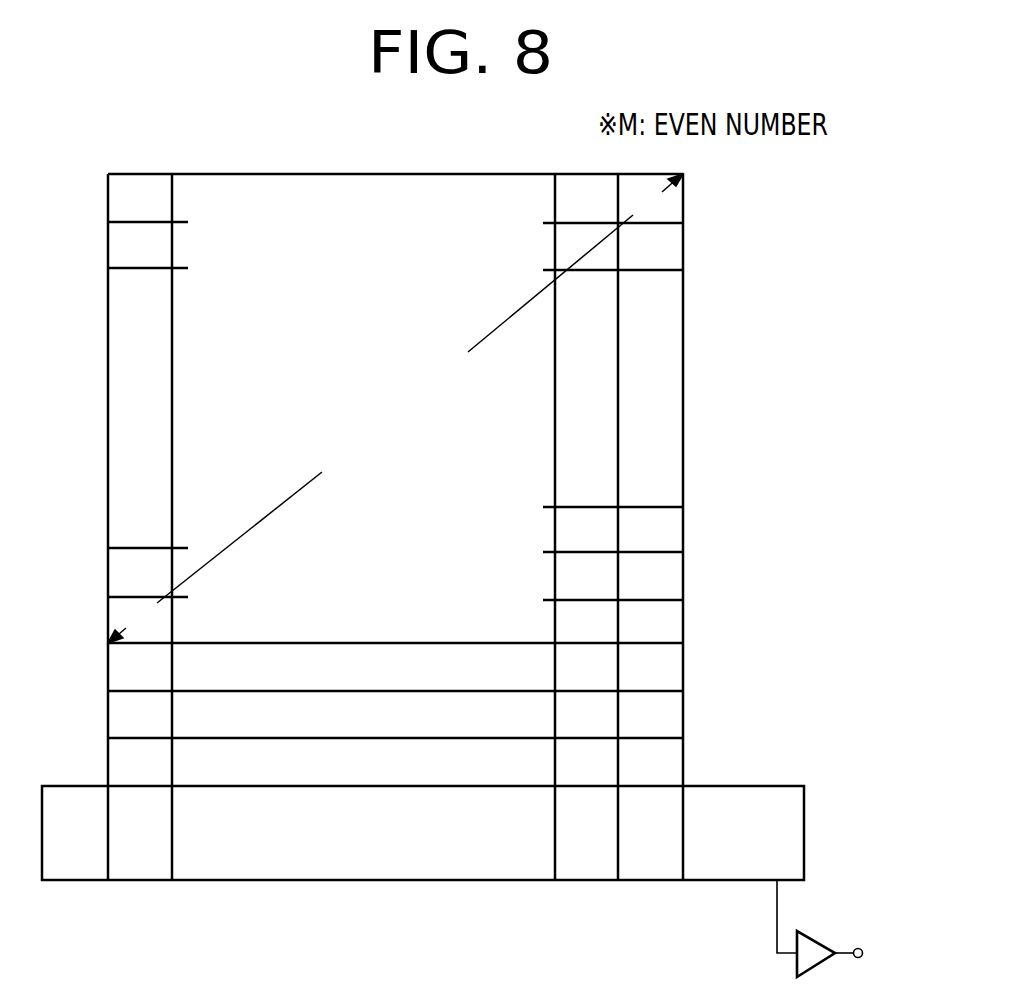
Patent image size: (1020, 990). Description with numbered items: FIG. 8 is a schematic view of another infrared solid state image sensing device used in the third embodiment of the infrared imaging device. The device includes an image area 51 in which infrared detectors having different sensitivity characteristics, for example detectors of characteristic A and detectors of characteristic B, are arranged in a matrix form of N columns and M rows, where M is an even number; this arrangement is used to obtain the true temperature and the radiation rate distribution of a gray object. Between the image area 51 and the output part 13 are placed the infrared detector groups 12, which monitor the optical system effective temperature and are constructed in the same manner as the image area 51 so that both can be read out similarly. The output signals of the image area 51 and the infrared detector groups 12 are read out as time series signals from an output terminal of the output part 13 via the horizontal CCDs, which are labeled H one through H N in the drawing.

The image area 51 is at (700, 174).
The infrared detector groups 12 is at (697, 652).
The output part 13 is at (479, 877).